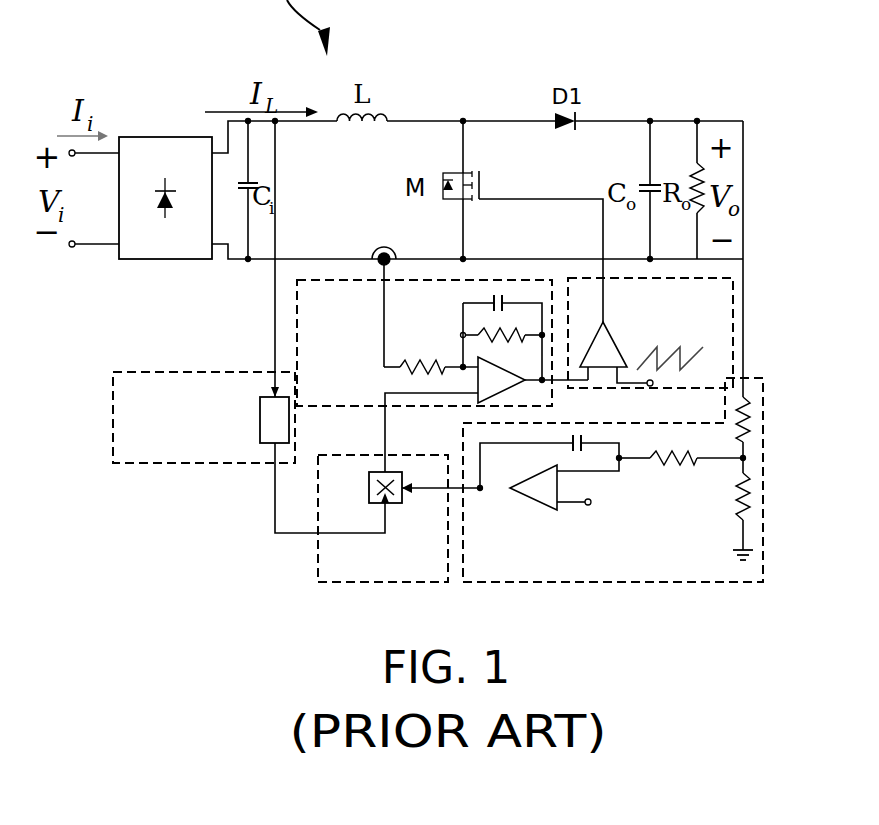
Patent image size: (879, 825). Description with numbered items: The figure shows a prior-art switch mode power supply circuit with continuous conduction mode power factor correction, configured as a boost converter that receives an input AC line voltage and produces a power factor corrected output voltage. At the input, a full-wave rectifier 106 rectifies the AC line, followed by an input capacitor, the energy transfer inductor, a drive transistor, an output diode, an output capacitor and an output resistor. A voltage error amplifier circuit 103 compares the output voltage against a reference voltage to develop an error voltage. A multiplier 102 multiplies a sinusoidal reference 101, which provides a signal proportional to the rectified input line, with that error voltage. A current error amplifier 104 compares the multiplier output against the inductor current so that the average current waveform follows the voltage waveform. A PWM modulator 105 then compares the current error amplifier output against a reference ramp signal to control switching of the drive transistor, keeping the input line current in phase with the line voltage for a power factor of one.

The sinusoidal reference 101 is at (133, 372).
The multiplier 102 is at (318, 562).
The voltage error amplifier circuit 103 is at (663, 582).
The current error amplifier 104 is at (298, 302).
The PWM modulator 105 is at (727, 280).
The full-wave rectifier 106 is at (163, 137).